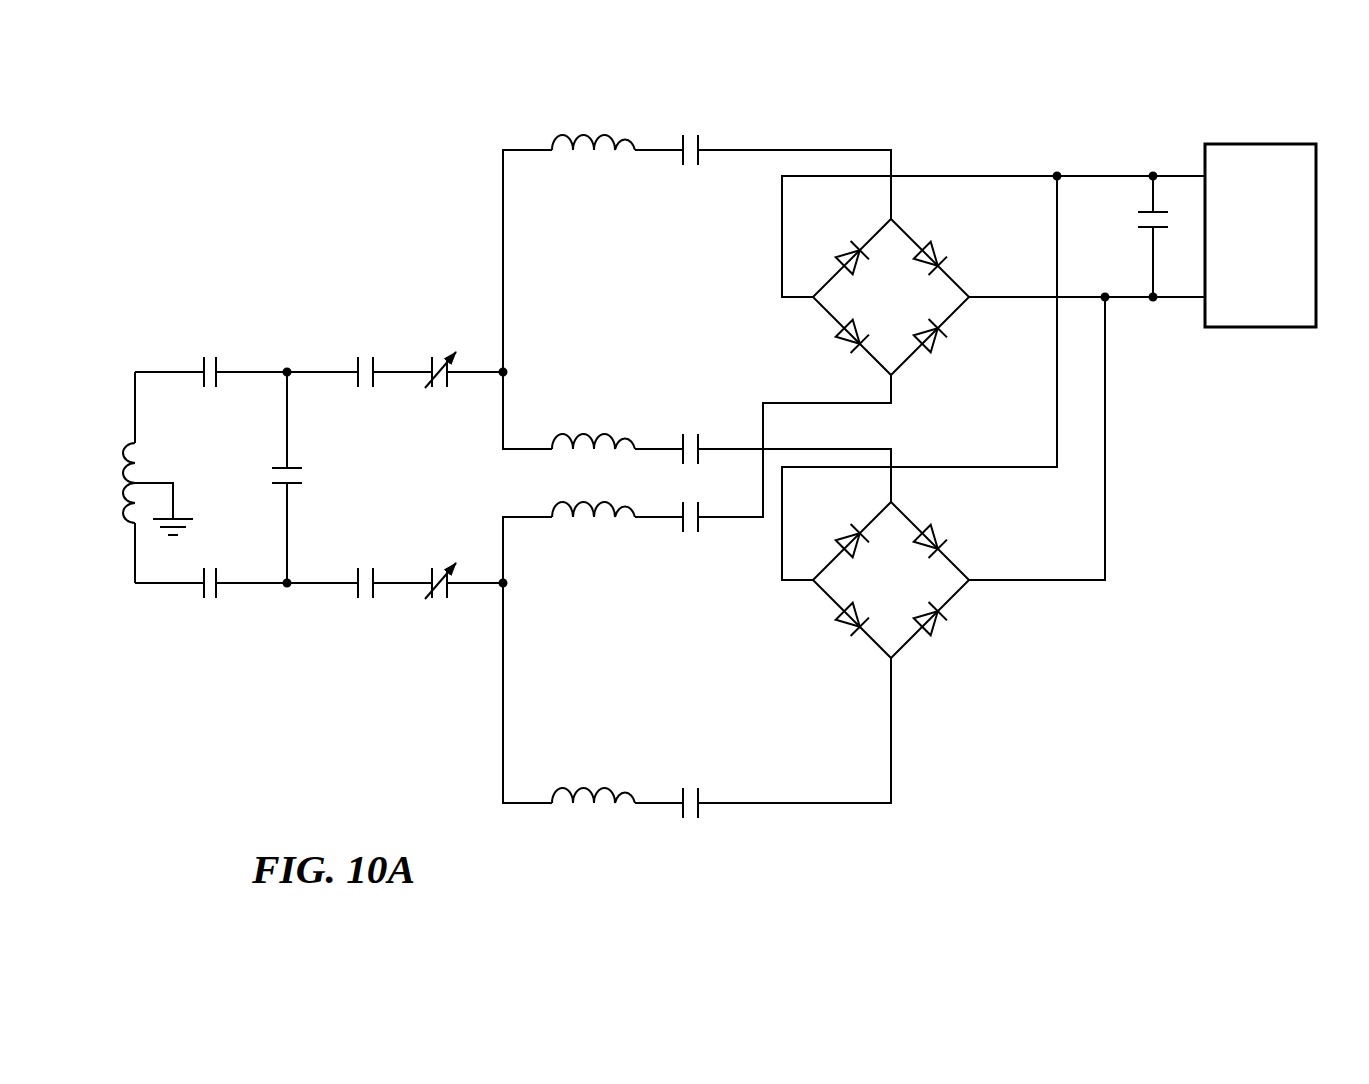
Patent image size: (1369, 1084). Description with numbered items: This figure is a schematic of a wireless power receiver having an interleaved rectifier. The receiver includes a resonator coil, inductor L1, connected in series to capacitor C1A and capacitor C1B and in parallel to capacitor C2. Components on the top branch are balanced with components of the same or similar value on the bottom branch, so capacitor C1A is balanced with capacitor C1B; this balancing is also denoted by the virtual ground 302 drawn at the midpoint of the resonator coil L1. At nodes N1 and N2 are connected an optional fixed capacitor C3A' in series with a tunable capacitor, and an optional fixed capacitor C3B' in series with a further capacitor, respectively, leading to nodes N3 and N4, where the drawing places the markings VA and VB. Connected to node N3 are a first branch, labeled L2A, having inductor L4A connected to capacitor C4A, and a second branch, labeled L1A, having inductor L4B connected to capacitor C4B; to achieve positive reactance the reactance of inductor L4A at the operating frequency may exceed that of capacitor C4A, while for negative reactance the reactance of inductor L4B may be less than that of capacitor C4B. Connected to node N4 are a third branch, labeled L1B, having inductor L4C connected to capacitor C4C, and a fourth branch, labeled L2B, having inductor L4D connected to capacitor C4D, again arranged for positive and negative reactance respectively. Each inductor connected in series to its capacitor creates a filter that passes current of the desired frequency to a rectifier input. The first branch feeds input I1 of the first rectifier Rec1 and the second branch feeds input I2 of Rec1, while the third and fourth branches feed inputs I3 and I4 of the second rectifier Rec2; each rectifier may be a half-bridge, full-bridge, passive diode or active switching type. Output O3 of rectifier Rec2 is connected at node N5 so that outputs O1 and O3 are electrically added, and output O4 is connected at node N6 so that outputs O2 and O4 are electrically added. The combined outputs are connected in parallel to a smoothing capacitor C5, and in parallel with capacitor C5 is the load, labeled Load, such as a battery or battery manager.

The capacitor C1A is at (208, 360).
The capacitor C1B is at (208, 600).
The node N1 is at (284, 360).
The node N2 is at (284, 600).
The node N3 is at (522, 376).
The node N4 is at (522, 585).
The node N5 is at (1056, 162).
The node N6 is at (1105, 282).
The optional fixed capacitor C3A' is at (365, 360).
The optional fixed capacitor C3B' is at (365, 600).
The capacitor C2 is at (305, 478).
The inductor L1 is at (110, 483).
The virtual ground 302 is at (183, 513).
The inductor L4A is at (593, 131).
The inductor L4B is at (593, 429).
The inductor L4C is at (593, 526).
The inductor L4D is at (593, 813).
The capacitor C4A is at (690, 135).
The capacitor C4B is at (692, 436).
The capacitor C4C is at (706, 532).
The capacitor C4D is at (692, 820).
The branch L1A is at (660, 440).
The branch L1B is at (672, 525).
The branch L2A is at (672, 157).
The branch L2B is at (673, 797).
The voltage VA at node N3 VA is at (497, 358).
The voltage VB at node N4 VB is at (495, 598).
The first rectifier Rec1 is at (891, 297).
The second rectifier Rec2 is at (891, 580).
The input I1 is at (905, 206).
The input I2 is at (905, 390).
The input I3 is at (904, 491).
The input I4 is at (907, 673).
The output O1 is at (795, 312).
The output O2 is at (983, 312).
The output O3 is at (795, 597).
The output O4 is at (982, 599).
The smoothing capacitor C5 is at (1136, 237).
The load Load is at (1260, 235).